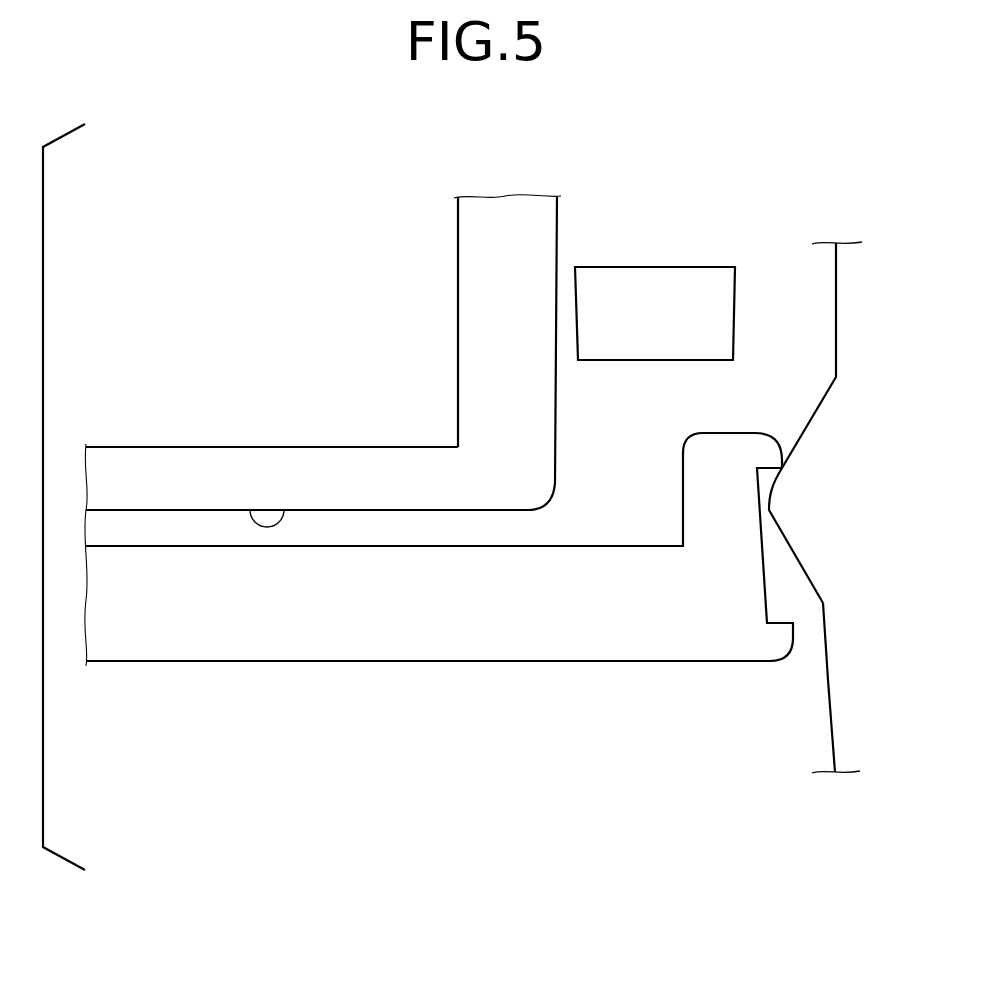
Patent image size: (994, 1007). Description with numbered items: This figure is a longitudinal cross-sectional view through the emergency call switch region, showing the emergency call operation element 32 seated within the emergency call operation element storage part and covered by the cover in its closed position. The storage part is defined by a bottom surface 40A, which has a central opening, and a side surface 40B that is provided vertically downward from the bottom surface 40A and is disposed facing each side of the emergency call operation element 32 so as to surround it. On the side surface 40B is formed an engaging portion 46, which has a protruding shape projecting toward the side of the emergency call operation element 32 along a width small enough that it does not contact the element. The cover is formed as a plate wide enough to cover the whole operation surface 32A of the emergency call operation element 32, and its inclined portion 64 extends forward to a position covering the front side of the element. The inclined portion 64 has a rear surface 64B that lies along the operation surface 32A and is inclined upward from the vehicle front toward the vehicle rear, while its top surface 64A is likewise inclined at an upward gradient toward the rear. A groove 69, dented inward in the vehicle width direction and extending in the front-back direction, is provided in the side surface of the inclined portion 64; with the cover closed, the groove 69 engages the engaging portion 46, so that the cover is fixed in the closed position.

The emergency call operation element 32 is at (480, 258).
The operation surface 32A is at (284, 510).
The bottom surface 40A is at (673, 362).
The side surface 40B is at (828, 705).
The engaging portion 46 is at (812, 470).
The inclined portion 64 is at (495, 604).
The top surface 64A is at (223, 661).
The rear surface 64B is at (612, 546).
The groove 69 is at (779, 621).